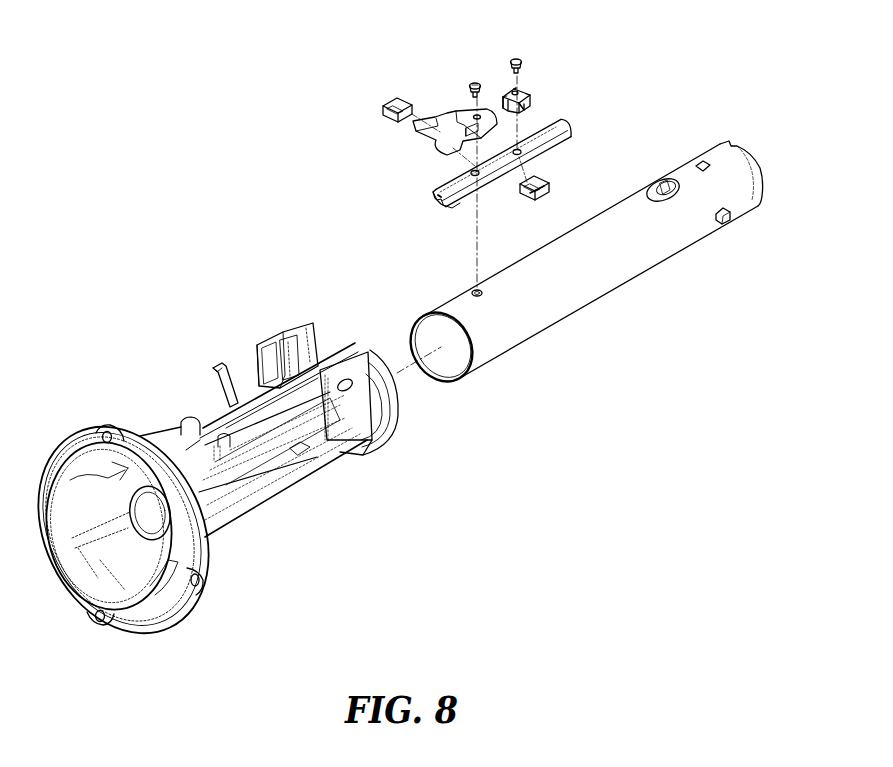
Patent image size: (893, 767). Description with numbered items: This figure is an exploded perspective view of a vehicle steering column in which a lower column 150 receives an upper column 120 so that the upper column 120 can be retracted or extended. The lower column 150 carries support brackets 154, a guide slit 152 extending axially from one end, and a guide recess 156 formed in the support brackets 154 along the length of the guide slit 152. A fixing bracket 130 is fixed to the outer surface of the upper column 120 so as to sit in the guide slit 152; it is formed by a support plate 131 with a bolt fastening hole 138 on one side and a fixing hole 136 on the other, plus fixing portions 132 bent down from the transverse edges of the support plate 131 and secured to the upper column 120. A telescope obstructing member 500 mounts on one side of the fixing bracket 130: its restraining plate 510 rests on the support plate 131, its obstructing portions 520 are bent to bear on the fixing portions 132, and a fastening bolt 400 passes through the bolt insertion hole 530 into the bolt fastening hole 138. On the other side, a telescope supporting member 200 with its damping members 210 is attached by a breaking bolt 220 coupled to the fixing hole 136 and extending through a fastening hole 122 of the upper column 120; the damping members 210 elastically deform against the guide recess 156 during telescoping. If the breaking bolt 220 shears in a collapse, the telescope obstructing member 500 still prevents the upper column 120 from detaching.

The upper column 120 is at (640, 271).
The fastening hole 122 is at (472, 290).
The fixing bracket 130 is at (553, 146).
The support plate 131 is at (428, 187).
The fixing portions 132 is at (459, 200).
The fixing hole 136 is at (470, 173).
The bolt fastening hole 138 is at (538, 196).
The lower column 150 is at (160, 450).
The guide slit 152 is at (250, 428).
The support brackets 154 is at (196, 418).
The guide recess 156 is at (273, 382).
The telescope supporting member 200 is at (443, 132).
The damping members 210 is at (397, 101).
The breaking bolt 220 is at (471, 80).
The fastening bolt 400 is at (523, 63).
The telescope obstructing member 500 is at (534, 100).
The restraining plate 510 is at (532, 95).
The obstructing portions 520 is at (522, 110).
The bolt insertion hole 530 is at (510, 86).